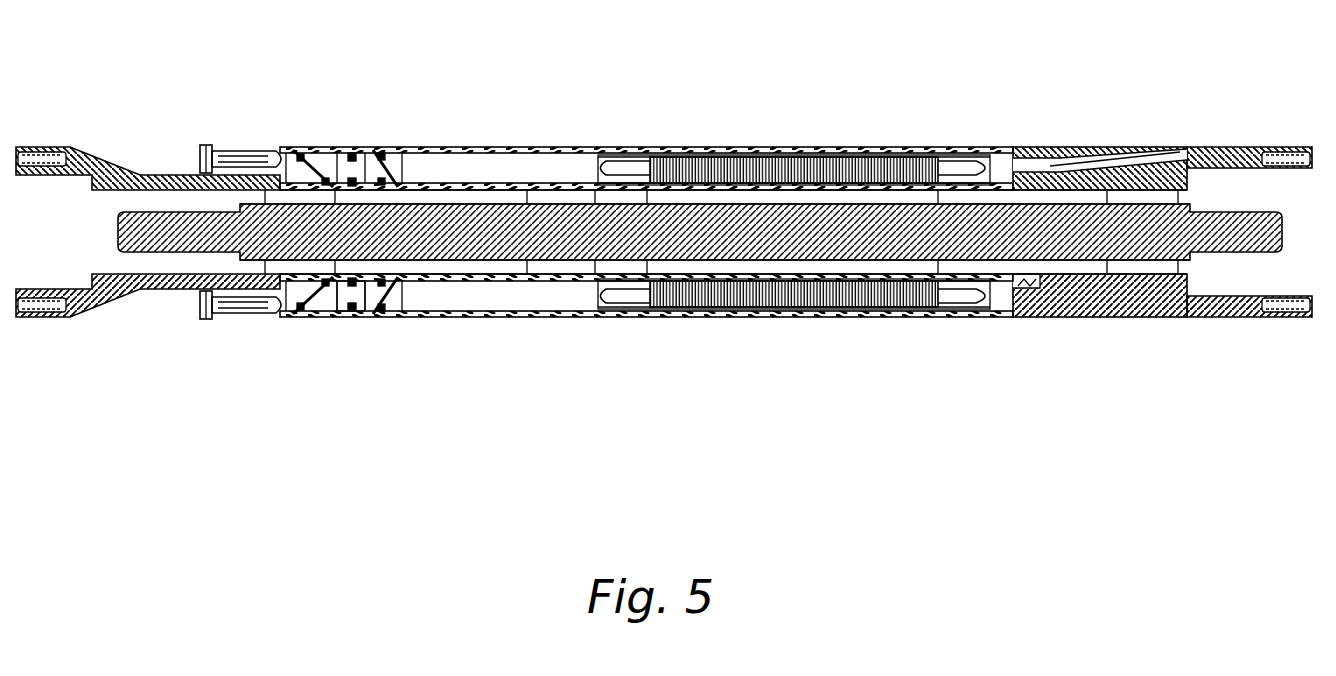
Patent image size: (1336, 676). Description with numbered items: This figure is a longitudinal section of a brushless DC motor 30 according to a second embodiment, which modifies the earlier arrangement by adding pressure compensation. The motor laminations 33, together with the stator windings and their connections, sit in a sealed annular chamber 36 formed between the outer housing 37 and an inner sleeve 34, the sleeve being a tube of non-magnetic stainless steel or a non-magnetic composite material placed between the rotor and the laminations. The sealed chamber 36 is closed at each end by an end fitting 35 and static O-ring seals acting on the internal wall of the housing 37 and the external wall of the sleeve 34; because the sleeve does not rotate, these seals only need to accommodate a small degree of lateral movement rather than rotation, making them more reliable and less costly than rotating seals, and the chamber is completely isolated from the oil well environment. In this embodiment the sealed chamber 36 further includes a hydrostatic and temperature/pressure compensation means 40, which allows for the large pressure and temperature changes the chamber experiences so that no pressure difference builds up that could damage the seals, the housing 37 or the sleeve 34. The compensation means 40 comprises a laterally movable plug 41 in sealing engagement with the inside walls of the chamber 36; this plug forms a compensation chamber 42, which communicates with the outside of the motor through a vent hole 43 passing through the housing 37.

The brushless DC motor 30 is at (658, 160).
The motor laminations 33 is at (780, 308).
The sleeve 34 is at (547, 278).
The end fitting 35 is at (306, 152).
The sealed annular chamber 36 is at (530, 165).
The outer housing 37 is at (852, 158).
The hydrostatic and temperature/pressure compensation means 40 is at (377, 150).
The laterally movable plug 41 is at (388, 292).
The compensation chamber 42 is at (350, 298).
The vent hole 43 is at (355, 150).